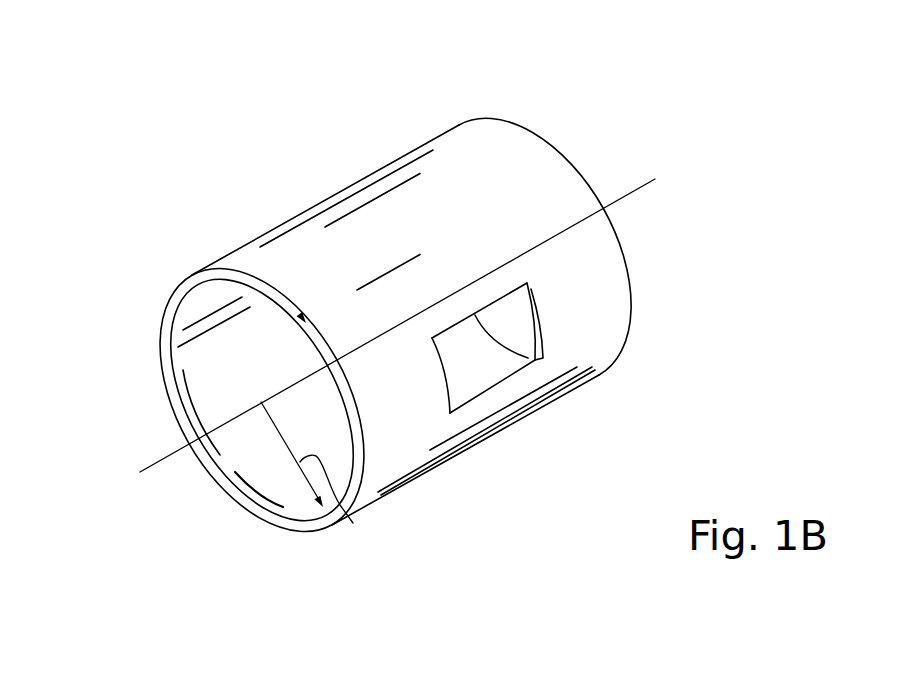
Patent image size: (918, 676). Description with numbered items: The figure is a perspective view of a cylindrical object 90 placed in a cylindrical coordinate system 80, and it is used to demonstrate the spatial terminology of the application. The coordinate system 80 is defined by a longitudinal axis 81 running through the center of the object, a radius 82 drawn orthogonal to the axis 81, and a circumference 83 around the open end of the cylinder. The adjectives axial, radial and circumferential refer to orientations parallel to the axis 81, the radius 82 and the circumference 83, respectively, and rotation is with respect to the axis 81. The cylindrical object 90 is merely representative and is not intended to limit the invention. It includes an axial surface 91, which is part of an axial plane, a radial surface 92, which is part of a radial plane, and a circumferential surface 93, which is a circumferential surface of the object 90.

The cylindrical coordinate system 80 is at (569, 131).
The longitudinal axis 81 is at (150, 468).
The radius 82 is at (333, 525).
The circumference 83 is at (170, 302).
The cylindrical object 90 is at (429, 113).
The axial surface 91 is at (518, 358).
The radial surface 92 is at (257, 512).
The circumferential surface 93 is at (370, 218).